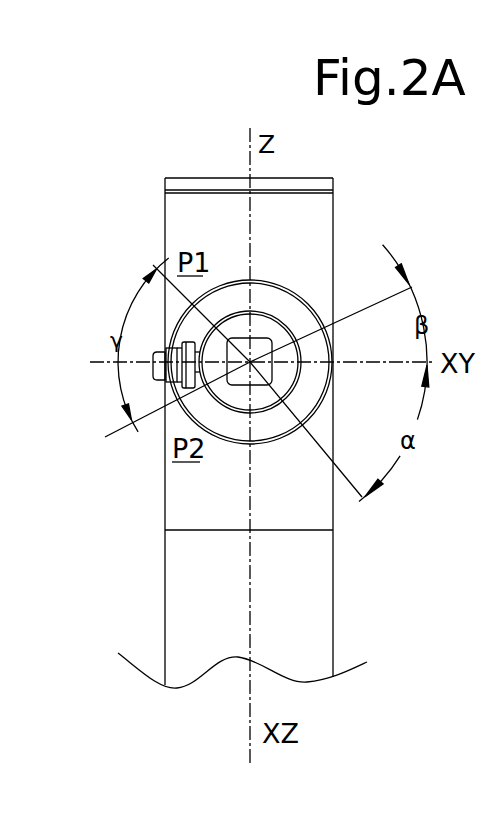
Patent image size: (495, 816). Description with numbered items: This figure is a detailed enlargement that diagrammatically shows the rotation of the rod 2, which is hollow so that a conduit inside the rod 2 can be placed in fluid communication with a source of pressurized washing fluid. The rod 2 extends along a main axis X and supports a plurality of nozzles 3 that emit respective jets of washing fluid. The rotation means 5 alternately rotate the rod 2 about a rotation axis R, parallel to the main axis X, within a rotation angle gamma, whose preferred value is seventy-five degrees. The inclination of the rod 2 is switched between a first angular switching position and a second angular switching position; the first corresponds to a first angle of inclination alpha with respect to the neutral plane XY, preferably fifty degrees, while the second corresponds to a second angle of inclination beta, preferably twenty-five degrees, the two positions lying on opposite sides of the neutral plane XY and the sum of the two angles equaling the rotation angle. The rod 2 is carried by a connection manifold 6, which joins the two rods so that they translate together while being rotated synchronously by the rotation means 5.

The rod 2 is at (280, 280).
The rotation means 5 is at (312, 285).
The nozzle 3 is at (258, 398).
The connection manifold 6 is at (193, 575).